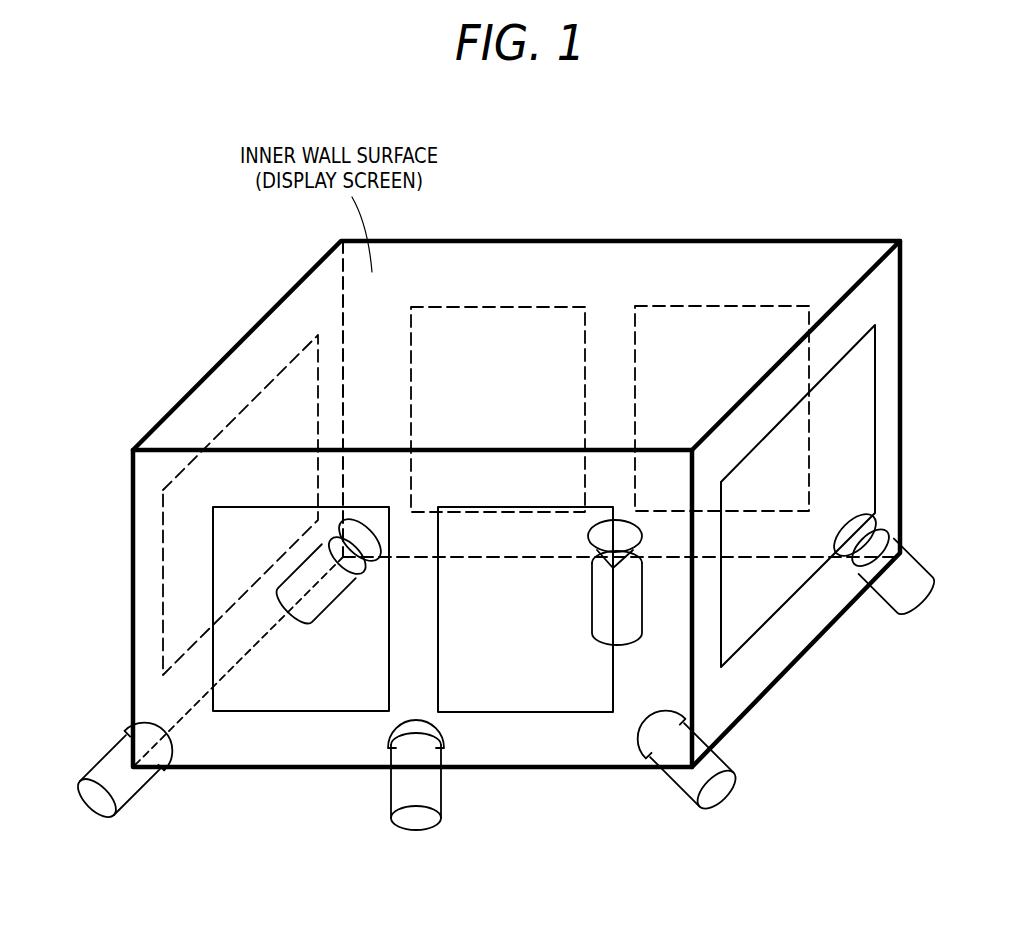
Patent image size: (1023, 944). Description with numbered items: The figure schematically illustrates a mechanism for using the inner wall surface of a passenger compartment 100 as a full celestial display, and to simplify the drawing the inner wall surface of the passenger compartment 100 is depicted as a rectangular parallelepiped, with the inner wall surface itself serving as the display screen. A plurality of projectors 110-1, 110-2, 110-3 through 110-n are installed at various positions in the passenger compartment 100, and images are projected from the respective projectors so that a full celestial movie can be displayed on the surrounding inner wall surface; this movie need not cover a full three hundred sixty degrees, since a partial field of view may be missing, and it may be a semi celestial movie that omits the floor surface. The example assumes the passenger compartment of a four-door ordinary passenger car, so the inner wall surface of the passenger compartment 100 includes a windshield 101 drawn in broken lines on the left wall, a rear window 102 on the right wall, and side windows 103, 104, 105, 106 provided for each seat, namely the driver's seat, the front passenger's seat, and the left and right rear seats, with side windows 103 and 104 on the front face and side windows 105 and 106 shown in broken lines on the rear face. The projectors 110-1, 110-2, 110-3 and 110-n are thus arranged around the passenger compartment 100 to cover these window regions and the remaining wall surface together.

The passenger compartment 100 is at (600, 196).
The windshield 101 is at (255, 425).
The rear window 102 is at (863, 413).
The side window 103 is at (280, 690).
The side window 104 is at (553, 690).
The side window 105 is at (493, 322).
The side window 106 is at (740, 323).
The projector 110-1 is at (132, 782).
The projector 110-2 is at (413, 823).
The projector 110-3 is at (718, 792).
The projector 110-n is at (923, 602).